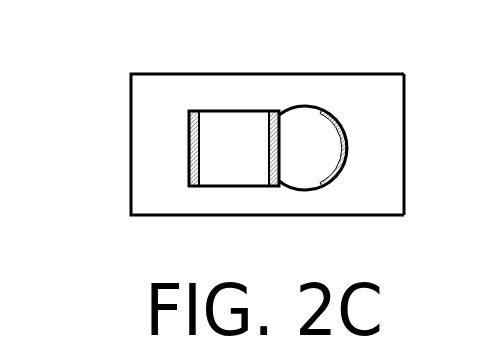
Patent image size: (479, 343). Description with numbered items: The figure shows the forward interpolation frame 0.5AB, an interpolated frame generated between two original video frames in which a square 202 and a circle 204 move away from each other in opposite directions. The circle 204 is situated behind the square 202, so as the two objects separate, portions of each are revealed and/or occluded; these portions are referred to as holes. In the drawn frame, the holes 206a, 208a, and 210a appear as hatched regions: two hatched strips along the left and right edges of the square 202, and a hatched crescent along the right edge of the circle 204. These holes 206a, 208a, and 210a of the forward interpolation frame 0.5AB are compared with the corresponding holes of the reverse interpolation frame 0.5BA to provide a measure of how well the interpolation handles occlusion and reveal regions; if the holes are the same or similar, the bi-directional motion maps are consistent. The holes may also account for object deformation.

The square 202 is at (233, 157).
The circle 204 is at (297, 152).
The hole 206a is at (189, 111).
The hole 208a is at (279, 120).
The hole 210a is at (345, 141).
The forward interpolation frame 0.5AB is at (132, 163).
The reverse interpolation frame 0.5BA is at (440, 144).